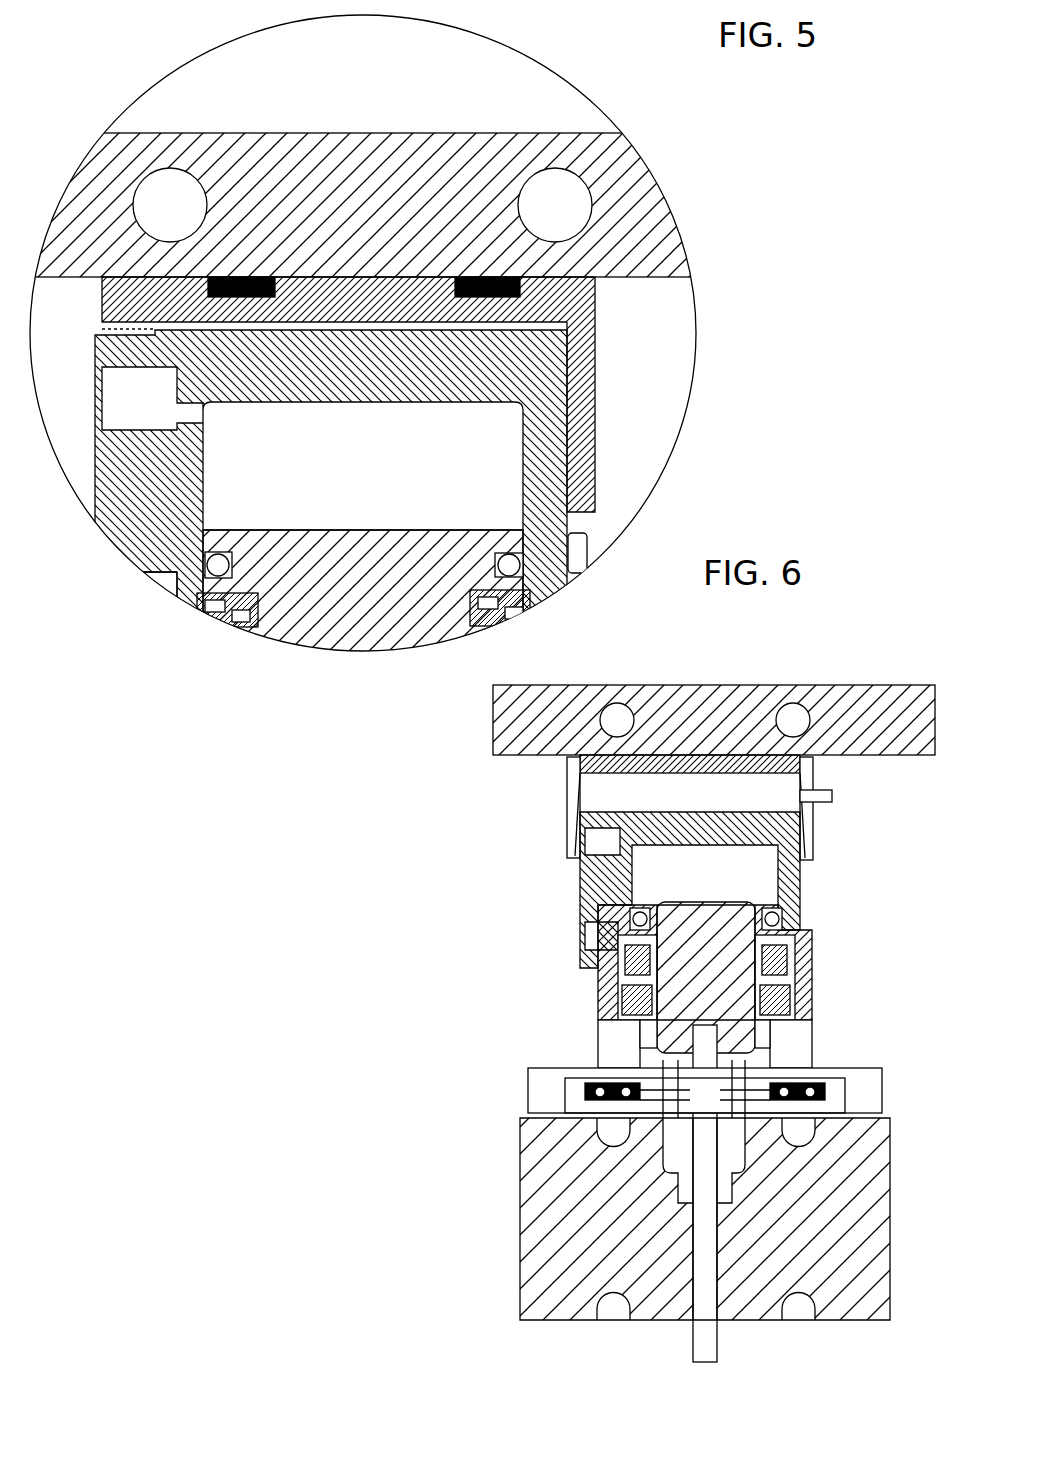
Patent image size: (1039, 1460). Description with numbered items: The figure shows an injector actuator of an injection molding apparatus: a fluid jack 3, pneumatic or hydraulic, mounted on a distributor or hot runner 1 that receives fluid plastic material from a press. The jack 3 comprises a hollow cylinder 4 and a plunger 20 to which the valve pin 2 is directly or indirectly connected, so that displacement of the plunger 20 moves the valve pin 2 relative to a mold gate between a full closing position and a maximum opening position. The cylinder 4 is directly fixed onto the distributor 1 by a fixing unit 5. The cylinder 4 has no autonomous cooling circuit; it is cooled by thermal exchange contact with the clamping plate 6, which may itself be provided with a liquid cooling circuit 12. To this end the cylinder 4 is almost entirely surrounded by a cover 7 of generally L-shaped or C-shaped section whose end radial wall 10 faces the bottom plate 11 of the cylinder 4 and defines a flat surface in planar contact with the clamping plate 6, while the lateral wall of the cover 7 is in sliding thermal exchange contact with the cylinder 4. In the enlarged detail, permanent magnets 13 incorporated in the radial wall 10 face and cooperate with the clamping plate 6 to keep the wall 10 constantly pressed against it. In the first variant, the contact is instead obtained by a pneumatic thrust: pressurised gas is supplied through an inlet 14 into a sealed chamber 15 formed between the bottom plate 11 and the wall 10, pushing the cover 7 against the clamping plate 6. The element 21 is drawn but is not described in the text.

In FIG. 6, the distributor or hot runner 1 is at (521, 1253).
In FIG. 6, the valve pin 2 is at (706, 1350).
In FIG. 6, the fluid jack 3 is at (650, 1051).
In FIG. 5, the hollow cylinder 4 is at (96, 462).
In FIG. 6, the hollow cylinder 4 is at (580, 884).
In FIG. 6, the fixing unit 5 is at (583, 1099).
In FIG. 5, the clamping plate 6 is at (378, 133).
In FIG. 6, the clamping plate 6 is at (857, 685).
In FIG. 6, the cover 7 is at (566, 818).
In FIG. 5, the end radial wall 10 is at (372, 276).
In FIG. 6, the end radial wall 10 is at (702, 755).
In FIG. 5, the bottom plate 11 is at (331, 401).
In FIG. 6, the bottom plate 11 is at (690, 848).
In FIG. 5, the liquid cooling circuit 12 is at (172, 186).
In FIG. 6, the liquid cooling circuit 12 is at (612, 716).
In FIG. 5, the permanent magnets 13 is at (240, 293).
In FIG. 6, the inlet 14 is at (834, 796).
In FIG. 6, the sealed chamber 15 is at (740, 878).
In FIG. 5, the plunger 20 is at (357, 530).
In FIG. 6, the plunger 20 is at (665, 981).
In FIG. 5, the housing cover 21 is at (598, 281).
In FIG. 6, the housing cover 21 is at (538, 757).